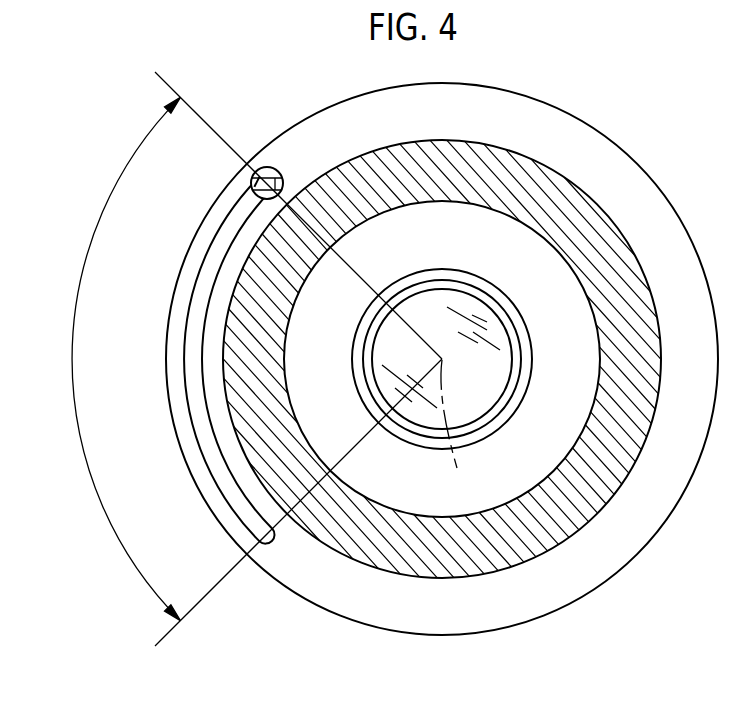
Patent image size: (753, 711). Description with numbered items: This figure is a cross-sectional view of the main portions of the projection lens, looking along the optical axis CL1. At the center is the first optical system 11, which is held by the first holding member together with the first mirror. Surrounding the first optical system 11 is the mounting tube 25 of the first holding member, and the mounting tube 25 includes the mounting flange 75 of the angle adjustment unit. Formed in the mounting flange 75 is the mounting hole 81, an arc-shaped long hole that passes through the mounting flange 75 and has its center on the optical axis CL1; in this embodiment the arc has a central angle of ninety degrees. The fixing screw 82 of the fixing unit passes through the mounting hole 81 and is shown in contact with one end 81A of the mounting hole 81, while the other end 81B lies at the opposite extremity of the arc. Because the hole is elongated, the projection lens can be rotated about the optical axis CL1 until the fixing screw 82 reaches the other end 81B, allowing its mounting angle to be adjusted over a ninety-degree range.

The mounting flange 75 is at (625, 178).
The mounting tube 25 is at (396, 573).
The first optical system 11 is at (483, 417).
The optical axis CL1 is at (458, 431).
The mounting hole 81 is at (192, 308).
The one end of the mounting hole 81A is at (278, 167).
The other end of the mounting hole 81B is at (272, 540).
The fixing screw 82 is at (268, 168).